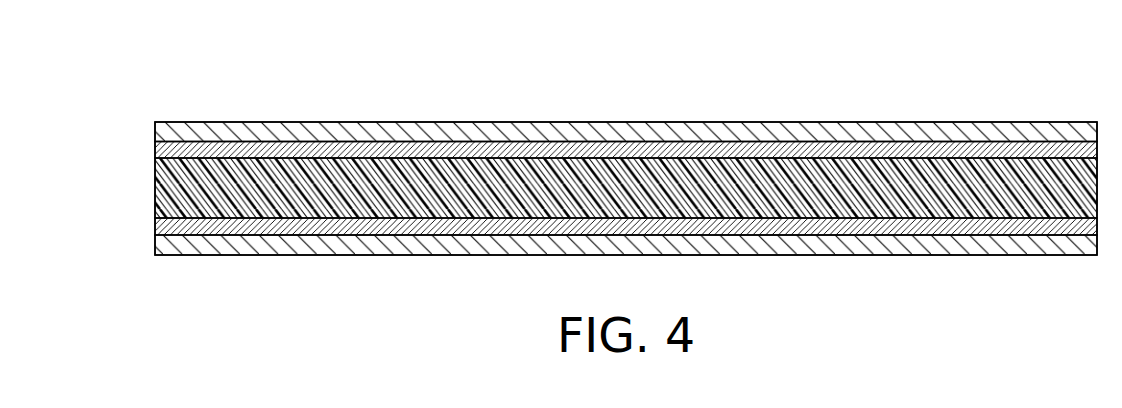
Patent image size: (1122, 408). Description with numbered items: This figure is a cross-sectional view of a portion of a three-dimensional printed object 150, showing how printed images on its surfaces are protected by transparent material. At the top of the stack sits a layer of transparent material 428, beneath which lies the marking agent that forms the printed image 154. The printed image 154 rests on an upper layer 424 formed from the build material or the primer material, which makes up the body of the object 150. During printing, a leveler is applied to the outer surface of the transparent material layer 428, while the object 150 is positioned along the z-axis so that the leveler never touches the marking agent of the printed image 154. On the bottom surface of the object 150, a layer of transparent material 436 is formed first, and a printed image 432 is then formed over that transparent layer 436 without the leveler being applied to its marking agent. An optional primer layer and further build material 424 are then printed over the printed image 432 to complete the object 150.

The printed object 150 is at (643, 77).
The layer of transparent material 428 is at (303, 122).
The printed image 154 is at (155, 150).
The upper layer 424 is at (155, 190).
The printed image 432 is at (155, 227).
The layer of transparent material 436 is at (155, 248).